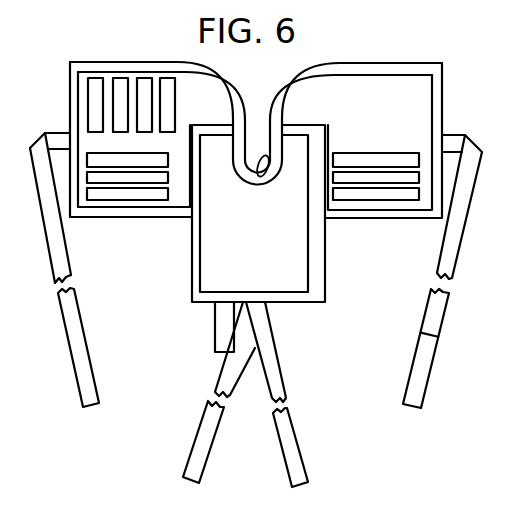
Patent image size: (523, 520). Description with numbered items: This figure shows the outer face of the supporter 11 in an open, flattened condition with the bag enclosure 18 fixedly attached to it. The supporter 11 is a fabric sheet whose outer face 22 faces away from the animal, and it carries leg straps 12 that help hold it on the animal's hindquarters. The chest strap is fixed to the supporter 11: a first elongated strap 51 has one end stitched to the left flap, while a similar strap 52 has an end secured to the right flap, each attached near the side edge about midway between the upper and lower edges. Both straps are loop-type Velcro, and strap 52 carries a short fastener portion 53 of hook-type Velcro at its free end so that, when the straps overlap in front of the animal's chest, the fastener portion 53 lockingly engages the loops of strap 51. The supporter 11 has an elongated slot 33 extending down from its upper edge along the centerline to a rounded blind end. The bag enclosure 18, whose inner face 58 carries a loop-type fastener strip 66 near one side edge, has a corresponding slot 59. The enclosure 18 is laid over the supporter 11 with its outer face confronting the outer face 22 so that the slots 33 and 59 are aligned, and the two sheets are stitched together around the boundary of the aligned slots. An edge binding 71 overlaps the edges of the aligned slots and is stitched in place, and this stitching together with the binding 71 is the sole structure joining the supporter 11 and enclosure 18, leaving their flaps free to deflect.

The supporter 11 is at (378, 63).
The leg straps 12 is at (189, 453).
The bag enclosure 18 is at (174, 296).
The outer face 22 is at (380, 142).
The elongated slot 33 is at (238, 117).
The first elongated strap 51 is at (60, 245).
The strap 52 is at (450, 243).
The fastener portion 53 is at (425, 365).
The inner face 58 is at (254, 213).
The slot 59 is at (264, 178).
The fastener strip 66 is at (318, 245).
The edge binding 71 is at (247, 181).